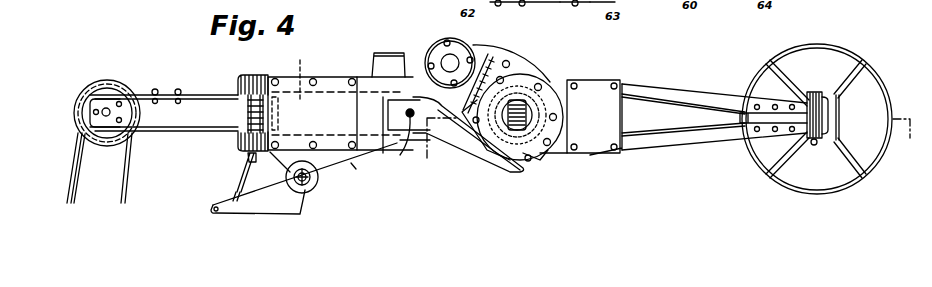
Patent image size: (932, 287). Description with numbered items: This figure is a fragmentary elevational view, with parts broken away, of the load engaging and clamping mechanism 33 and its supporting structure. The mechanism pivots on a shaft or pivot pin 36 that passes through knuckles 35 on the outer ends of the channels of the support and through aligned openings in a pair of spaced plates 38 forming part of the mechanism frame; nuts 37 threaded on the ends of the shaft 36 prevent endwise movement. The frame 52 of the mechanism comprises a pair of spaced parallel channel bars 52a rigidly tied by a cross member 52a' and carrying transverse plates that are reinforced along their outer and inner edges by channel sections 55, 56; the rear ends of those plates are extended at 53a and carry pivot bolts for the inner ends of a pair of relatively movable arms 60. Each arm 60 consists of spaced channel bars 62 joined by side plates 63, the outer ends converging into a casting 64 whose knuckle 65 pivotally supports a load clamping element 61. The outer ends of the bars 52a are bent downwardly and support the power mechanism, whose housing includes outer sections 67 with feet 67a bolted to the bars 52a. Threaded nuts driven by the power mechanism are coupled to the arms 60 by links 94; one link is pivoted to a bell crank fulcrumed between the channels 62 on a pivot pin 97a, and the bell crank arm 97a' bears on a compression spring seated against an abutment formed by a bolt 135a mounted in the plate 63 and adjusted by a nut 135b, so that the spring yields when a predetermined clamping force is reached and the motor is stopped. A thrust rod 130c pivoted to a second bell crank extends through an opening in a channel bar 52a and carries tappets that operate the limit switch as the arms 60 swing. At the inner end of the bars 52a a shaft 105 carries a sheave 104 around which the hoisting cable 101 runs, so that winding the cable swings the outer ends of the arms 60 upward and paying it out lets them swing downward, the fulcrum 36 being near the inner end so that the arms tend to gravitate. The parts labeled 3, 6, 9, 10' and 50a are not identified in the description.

The section line 3 is at (666, 148).
The pin 6 is at (296, 63).
The cylinder 9 is at (478, 80).
The motor unit 10' is at (484, 108).
The load engaging and clamping mechanism 33 is at (371, 65).
The knuckles 35 is at (308, 189).
The shaft or pivot pin 36 is at (312, 177).
The nuts 37 is at (312, 181).
The spaced plates 38 is at (305, 174).
The inner bar 50a is at (246, 108).
The frame 52 is at (210, 128).
The channel bars 52a is at (333, 141).
The cross member 52a' is at (166, 84).
The rearward extensions of the plates 53a is at (238, 83).
The channel sections 55 is at (387, 110).
The channel sections 56 is at (278, 104).
The relatively movable arms 60 is at (608, 130).
The load clamping elements 61 is at (840, 55).
The channel bars 62 is at (683, 93).
The side plates 63 is at (605, 75).
The casting 64 is at (746, 130).
The knuckle 65 is at (829, 113).
The outer housing sections 67 is at (513, 84).
The feet 67a is at (533, 158).
The link 94 is at (530, 110).
The pivot pin 97a is at (472, 9).
The bell crank arm 97a' is at (516, 15).
The cable 101 is at (125, 188).
The sheave 104 is at (107, 103).
The shaft 105 is at (88, 126).
The thrust rod 130c is at (398, 140).
The bolt 135a is at (548, 13).
The nut 135b is at (555, 8).